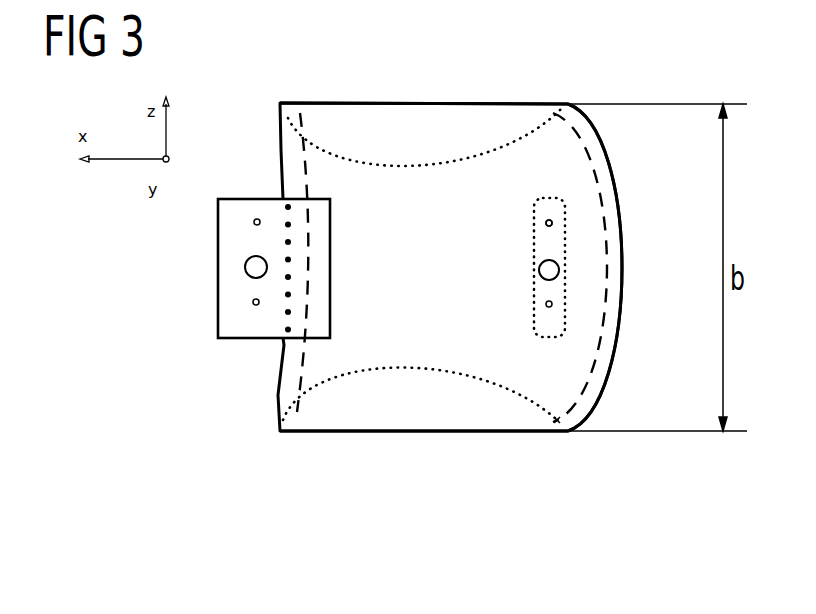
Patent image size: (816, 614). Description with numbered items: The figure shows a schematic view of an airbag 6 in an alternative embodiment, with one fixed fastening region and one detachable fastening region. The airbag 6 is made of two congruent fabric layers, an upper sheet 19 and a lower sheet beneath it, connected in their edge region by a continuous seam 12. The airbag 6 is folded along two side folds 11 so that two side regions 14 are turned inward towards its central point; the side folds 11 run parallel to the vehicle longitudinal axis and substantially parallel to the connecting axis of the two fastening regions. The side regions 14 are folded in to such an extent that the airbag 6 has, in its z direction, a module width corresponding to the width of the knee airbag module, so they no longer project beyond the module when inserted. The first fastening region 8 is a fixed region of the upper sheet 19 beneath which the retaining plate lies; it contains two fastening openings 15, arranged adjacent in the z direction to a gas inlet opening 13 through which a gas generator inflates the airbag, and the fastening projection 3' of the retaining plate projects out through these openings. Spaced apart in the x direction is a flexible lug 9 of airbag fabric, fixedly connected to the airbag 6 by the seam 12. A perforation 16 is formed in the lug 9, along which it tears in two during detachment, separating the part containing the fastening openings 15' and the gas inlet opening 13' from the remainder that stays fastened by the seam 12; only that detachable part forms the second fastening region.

The fastening projection 3' is at (511, 276).
The airbag 6 is at (403, 348).
The first fastening region 8 is at (563, 297).
The lug 9 is at (227, 318).
The side fold 11 is at (517, 102).
The seam 12 is at (295, 377).
The gas inlet opening 13 is at (611, 253).
The gas inlet opening 13' is at (207, 289).
The side region 14 is at (328, 127).
The fastening opening 15 is at (617, 197).
The fastening opening 15' is at (200, 262).
The perforation 16 is at (287, 237).
The upper sheet 19 is at (560, 172).